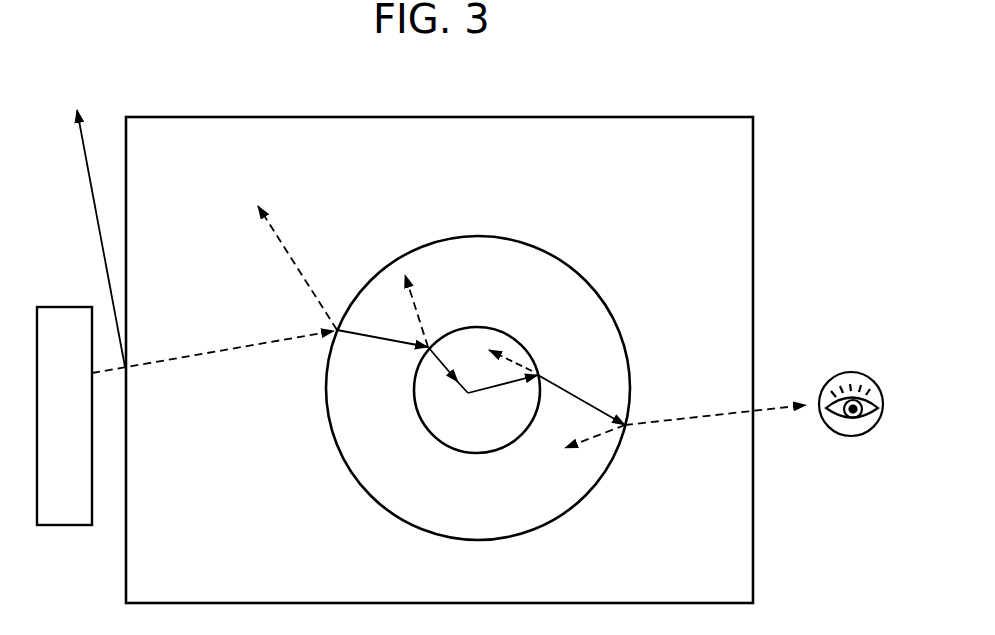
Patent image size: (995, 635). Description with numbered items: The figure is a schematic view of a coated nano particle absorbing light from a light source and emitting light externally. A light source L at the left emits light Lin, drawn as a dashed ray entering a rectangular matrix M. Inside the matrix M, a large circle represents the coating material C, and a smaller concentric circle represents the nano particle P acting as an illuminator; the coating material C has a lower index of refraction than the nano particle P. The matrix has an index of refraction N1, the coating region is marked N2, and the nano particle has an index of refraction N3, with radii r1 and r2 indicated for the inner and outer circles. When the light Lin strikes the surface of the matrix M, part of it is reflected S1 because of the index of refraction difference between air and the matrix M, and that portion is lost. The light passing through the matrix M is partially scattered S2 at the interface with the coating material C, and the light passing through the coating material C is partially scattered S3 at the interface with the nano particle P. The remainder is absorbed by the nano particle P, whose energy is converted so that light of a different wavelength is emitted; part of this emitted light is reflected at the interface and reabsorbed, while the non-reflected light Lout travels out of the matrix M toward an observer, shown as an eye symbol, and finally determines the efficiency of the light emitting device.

The matrix M is at (439, 360).
The light source L is at (64, 416).
The coating material C is at (478, 388).
The index of refraction of the matrix N1 is at (232, 496).
The refractive index of annular region N2 is at (384, 438).
The index of refraction of the nano particle N3 is at (477, 390).
The nano particle P is at (497, 361).
The inner radius r1 is at (595, 448).
The outer radius r2 is at (525, 251).
The light Lin is at (213, 361).
The non-reflected light Lout is at (715, 428).
The reflected light S1 is at (89, 238).
The scattered light S2 is at (297, 259).
The scattered light S3 is at (425, 309).